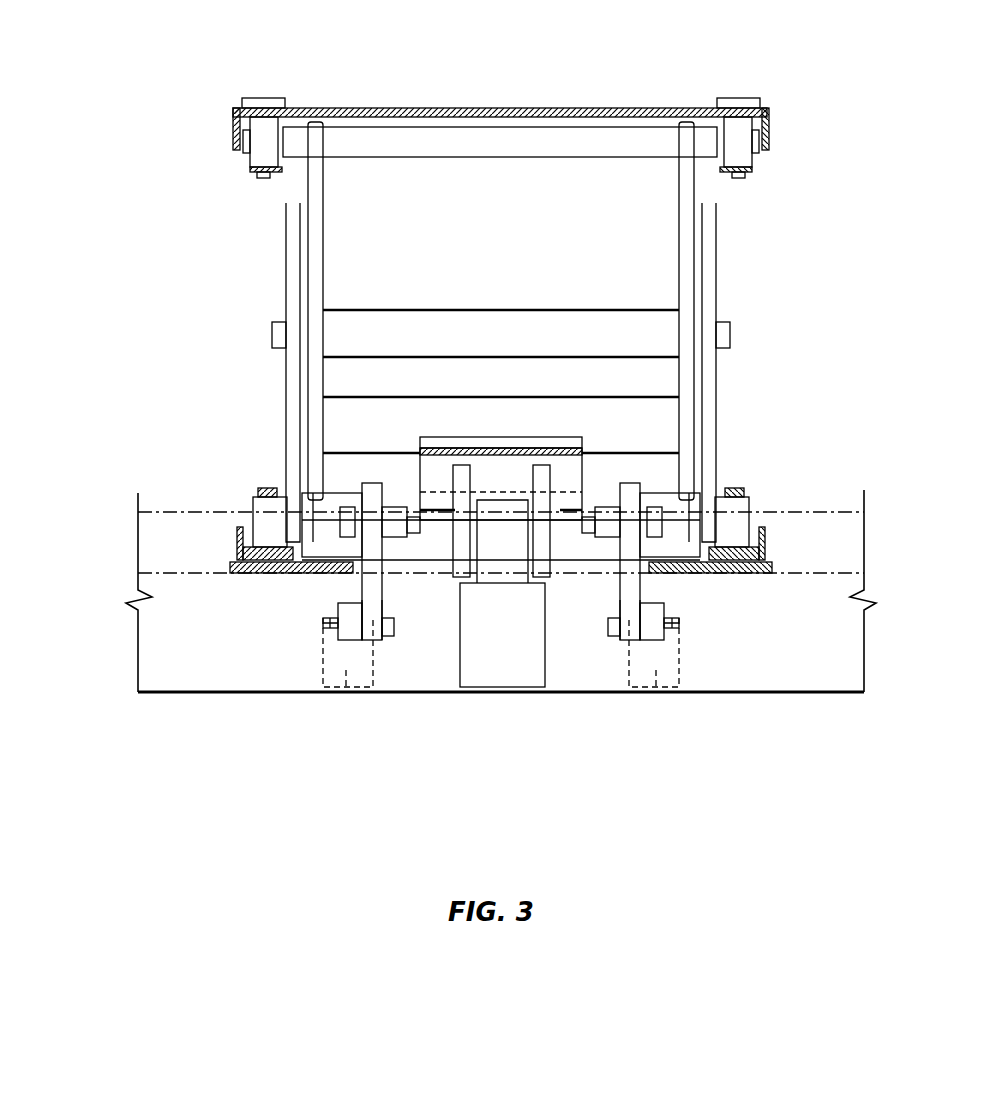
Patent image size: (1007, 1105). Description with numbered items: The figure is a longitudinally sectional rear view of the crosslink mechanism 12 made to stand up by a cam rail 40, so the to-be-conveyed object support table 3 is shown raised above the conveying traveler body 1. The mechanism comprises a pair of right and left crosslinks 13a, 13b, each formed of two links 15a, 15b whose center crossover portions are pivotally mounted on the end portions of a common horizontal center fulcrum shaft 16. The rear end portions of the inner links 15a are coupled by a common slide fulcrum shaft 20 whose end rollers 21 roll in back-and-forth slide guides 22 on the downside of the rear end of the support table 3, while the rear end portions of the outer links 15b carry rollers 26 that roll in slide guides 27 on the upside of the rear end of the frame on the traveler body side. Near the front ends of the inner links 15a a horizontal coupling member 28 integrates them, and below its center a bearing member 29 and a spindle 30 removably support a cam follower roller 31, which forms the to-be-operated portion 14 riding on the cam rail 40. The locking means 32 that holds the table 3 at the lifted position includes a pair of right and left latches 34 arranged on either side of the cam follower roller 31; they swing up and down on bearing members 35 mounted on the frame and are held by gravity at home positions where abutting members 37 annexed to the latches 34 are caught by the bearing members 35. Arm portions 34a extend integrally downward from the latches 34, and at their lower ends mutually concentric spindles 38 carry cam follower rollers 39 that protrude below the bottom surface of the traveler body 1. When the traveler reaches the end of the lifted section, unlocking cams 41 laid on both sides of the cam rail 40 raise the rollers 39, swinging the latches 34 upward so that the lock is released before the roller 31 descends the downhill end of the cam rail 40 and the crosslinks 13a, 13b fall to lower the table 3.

The conveying traveler body 1 is at (845, 505).
The to-be-conveyed object support table 3 is at (528, 108).
The crosslink mechanism 12 is at (716, 278).
The crosslink 13a is at (716, 244).
The crosslink 13b is at (286, 246).
The to-be-operated portion 14 is at (485, 586).
The link 15a is at (323, 227).
The link 15b is at (286, 284).
The center fulcrum shaft 16 is at (548, 330).
The common slide fulcrum shaft 20 is at (455, 140).
The roller 21 is at (264, 130).
The back-and-forth slide guide 22 is at (256, 176).
The roller 26 is at (243, 552).
The back-and-forth slide guide 27 is at (258, 490).
The coupling member 28 is at (500, 436).
The bearing member 29 is at (462, 465).
The spindle 30 is at (428, 576).
The cam follower roller 31 is at (503, 582).
The locking means 32 is at (372, 483).
The latch 34 is at (362, 505).
The arm portion 34a is at (378, 625).
The bearing member 35 is at (306, 572).
The abutting member 37 is at (343, 515).
The spindle 38 is at (326, 628).
The cam follower roller 39 is at (345, 640).
The cam rail 40 is at (498, 666).
The unlocking cam 41 is at (340, 695).